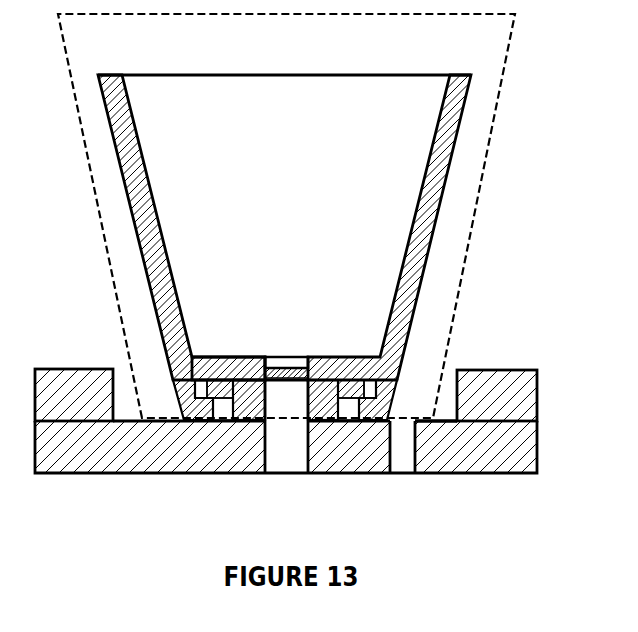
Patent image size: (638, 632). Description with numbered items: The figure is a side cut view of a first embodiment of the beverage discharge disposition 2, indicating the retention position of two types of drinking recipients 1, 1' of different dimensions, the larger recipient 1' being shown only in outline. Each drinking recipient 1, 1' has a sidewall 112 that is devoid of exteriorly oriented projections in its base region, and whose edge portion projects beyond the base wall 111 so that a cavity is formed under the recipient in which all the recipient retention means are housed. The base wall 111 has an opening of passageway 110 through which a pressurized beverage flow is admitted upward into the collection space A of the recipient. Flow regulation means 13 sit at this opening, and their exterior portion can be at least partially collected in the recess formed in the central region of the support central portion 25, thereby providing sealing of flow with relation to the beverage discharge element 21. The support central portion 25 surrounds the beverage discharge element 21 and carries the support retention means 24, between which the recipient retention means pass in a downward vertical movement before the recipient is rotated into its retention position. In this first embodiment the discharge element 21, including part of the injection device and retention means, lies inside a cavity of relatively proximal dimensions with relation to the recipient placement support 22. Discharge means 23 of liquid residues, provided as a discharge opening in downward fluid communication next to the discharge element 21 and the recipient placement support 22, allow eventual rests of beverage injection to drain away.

The drinking recipient 1 is at (270, 308).
The drinking recipient 1' is at (308, 216).
The collection space A is at (287, 201).
The sidewall 112 is at (167, 227).
The base wall 111 is at (238, 353).
The opening of passageway 110 is at (270, 353).
The flow regulation means 13 is at (289, 363).
The beverage discharge disposition 2 is at (286, 413).
The beverage discharge element 21 is at (286, 474).
The recipient placement support 22 is at (425, 416).
The discharge means 23 is at (401, 474).
The support retention means 24 is at (219, 393).
The support central portion 25 is at (222, 414).